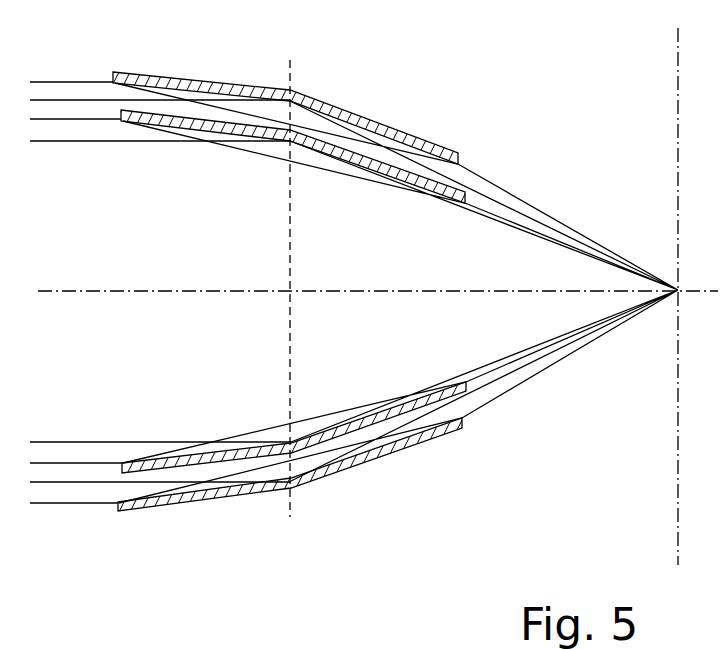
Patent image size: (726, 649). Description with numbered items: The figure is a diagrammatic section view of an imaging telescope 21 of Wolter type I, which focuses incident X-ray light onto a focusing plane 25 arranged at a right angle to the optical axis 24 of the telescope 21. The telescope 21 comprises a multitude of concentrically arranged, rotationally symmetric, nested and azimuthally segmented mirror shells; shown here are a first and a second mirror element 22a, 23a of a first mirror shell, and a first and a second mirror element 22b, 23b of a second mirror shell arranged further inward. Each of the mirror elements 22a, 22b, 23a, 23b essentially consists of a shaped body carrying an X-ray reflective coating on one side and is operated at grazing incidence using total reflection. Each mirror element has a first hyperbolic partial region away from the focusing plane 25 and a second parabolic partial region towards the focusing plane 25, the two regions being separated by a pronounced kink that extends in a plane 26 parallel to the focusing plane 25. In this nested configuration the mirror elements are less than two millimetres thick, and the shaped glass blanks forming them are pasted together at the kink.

The imaging telescope 21 is at (456, 122).
The first mirror element 22a is at (265, 88).
The first mirror element 22b is at (213, 128).
The second mirror element 23a is at (265, 497).
The second mirror element 23b is at (220, 457).
The optical axis 24 is at (100, 291).
The focusing plane 25 is at (673, 98).
The plane 26 is at (287, 242).